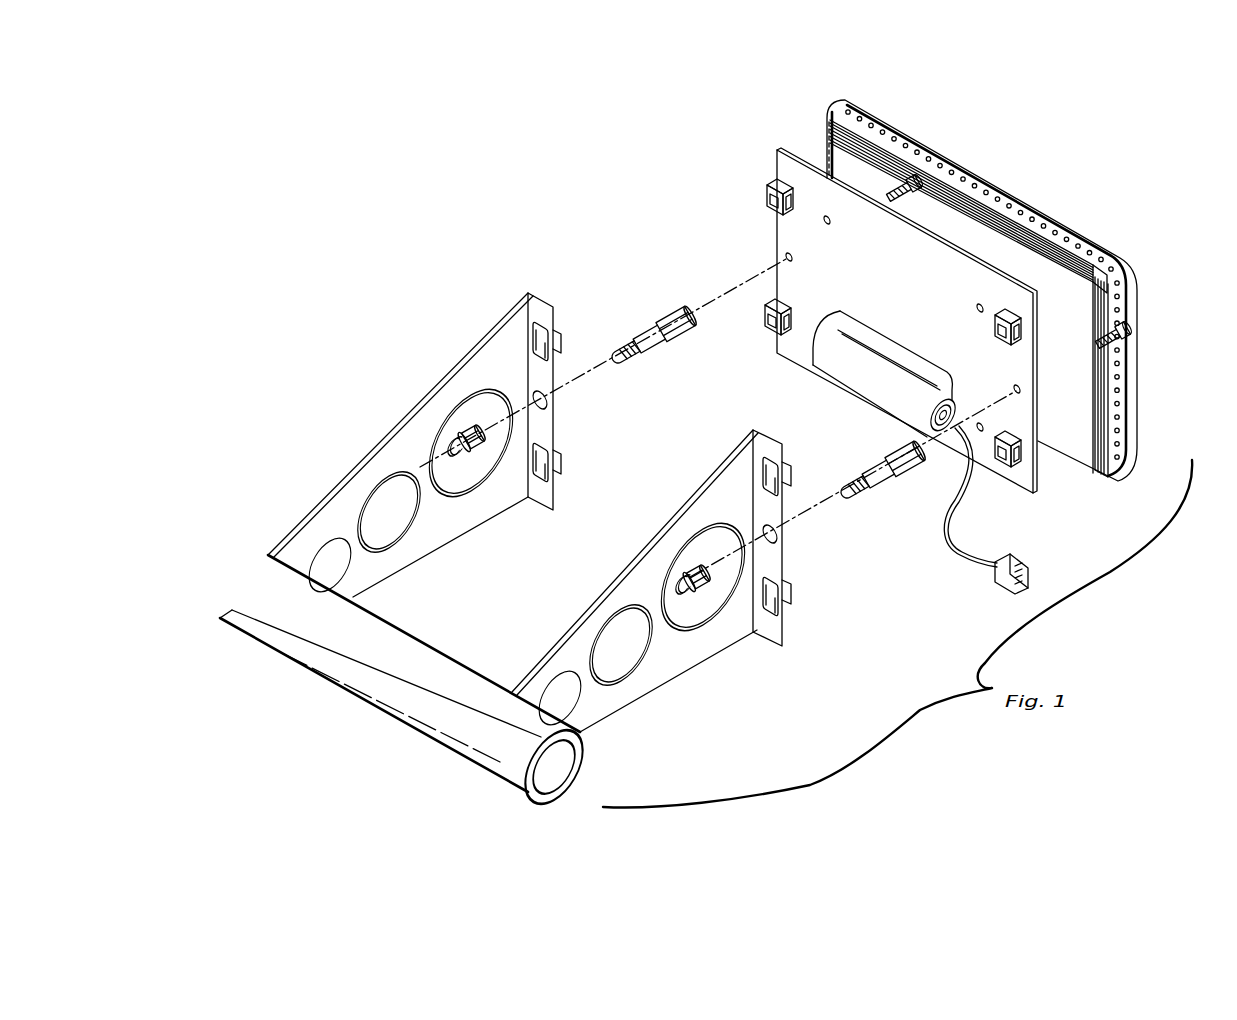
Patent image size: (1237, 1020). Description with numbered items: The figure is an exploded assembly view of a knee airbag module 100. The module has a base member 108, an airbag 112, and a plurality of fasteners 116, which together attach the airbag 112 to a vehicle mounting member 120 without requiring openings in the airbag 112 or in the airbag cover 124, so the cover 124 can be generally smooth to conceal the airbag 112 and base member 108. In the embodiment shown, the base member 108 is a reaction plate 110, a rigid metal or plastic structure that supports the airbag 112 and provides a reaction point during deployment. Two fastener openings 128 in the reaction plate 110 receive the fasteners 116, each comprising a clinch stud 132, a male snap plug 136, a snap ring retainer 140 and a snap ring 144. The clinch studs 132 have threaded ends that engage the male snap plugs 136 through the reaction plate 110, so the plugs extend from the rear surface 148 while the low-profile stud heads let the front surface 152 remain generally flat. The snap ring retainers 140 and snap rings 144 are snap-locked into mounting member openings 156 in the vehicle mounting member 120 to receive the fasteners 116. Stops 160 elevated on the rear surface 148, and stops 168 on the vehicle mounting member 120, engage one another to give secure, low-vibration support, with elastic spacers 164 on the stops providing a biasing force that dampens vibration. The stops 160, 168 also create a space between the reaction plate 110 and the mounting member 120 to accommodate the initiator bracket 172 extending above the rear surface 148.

The knee airbag module 100 is at (485, 187).
The base member 108 is at (955, 290).
The reaction plate 110 is at (910, 297).
The airbag 112 is at (835, 148).
The fasteners 116 is at (897, 192).
The vehicle mounting member 120 is at (300, 400).
The airbag cover 124 is at (1016, 190).
The fastener openings 128 is at (787, 255).
The clinch stud 132 is at (912, 176).
The male snap plug 136 is at (648, 330).
The snap ring retainer 140 is at (478, 424).
The snap ring 144 is at (452, 447).
The rear surface 148 is at (808, 300).
The front surface 152 is at (927, 232).
The mounting member openings 156 is at (549, 408).
The stops 160 is at (777, 183).
The elastic spacers 164 is at (768, 200).
The stops 168 is at (566, 314).
The initiator bracket 172 is at (891, 447).